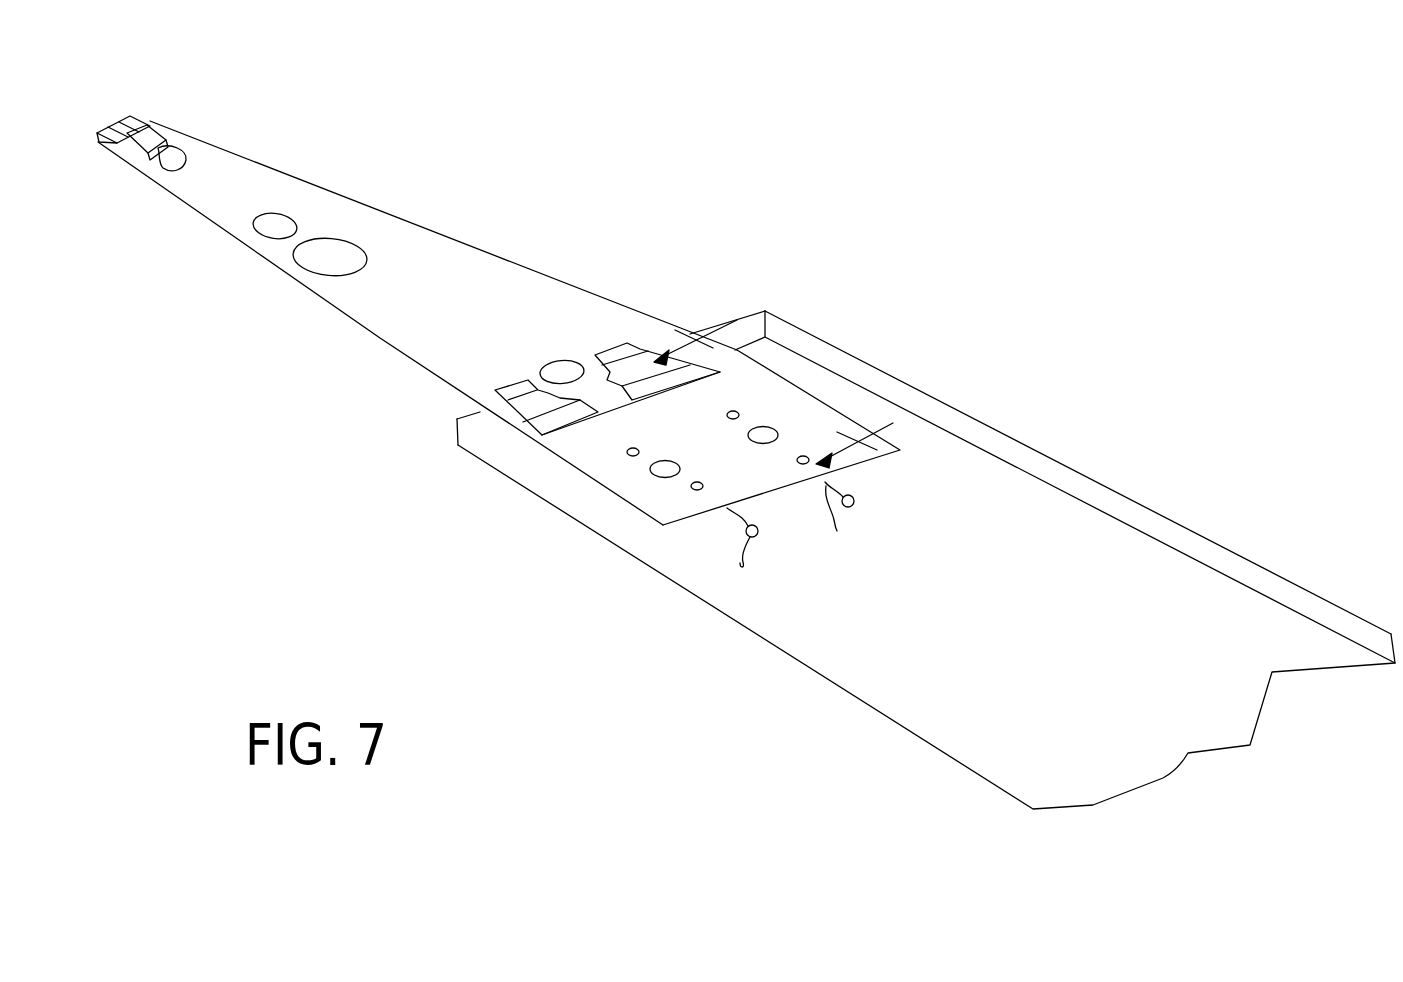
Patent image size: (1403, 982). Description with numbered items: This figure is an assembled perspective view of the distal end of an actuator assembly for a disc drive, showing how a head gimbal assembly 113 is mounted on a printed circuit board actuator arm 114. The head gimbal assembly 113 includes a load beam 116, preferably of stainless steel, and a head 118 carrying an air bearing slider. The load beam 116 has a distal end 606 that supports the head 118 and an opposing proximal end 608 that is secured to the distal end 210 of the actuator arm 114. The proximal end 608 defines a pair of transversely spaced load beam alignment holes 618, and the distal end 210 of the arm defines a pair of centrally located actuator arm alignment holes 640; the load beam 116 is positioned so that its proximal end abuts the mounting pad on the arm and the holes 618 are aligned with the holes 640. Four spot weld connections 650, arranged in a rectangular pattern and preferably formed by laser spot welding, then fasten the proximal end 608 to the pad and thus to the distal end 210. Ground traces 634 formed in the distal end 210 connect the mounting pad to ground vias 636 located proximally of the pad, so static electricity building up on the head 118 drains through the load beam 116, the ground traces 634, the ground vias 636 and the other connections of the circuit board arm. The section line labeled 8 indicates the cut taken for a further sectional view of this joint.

The head gimbal assembly 113 is at (510, 155).
The actuator arm 114 is at (1077, 371).
The load beam 116 is at (386, 207).
The head 118 is at (158, 138).
The distal end of the actuator arm 210 is at (685, 556).
The distal end of the load beam 606 is at (216, 207).
The proximal end of the load beam 608 is at (737, 382).
The load beam alignment holes 618 is at (697, 439).
The actuator arm alignment holes 640 is at (761, 436).
The spot weld connections 650 is at (728, 415).
The ground traces 634 is at (758, 526).
The ground vias 636 is at (887, 517).
The section line 8- 8 is at (781, 386).